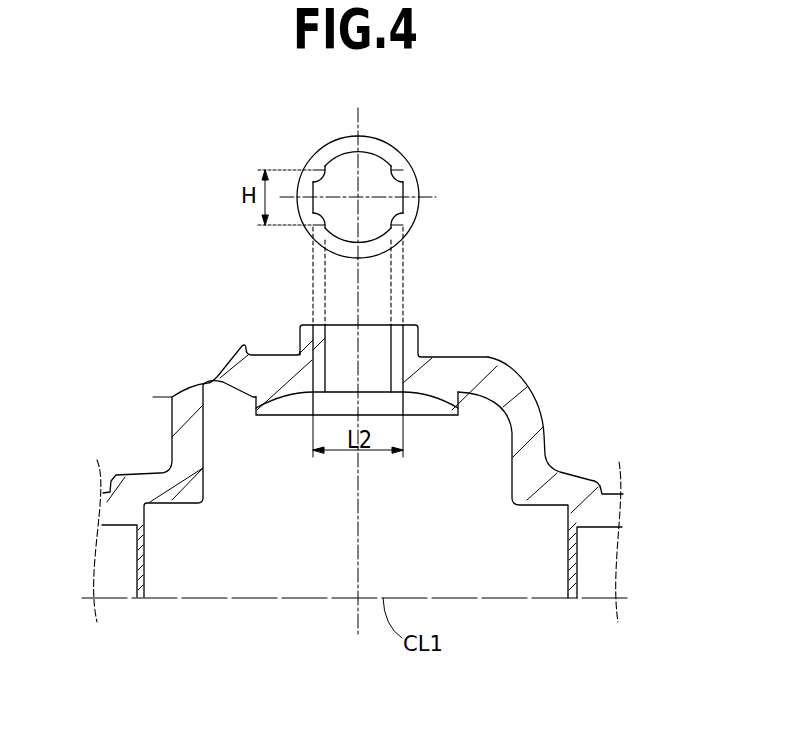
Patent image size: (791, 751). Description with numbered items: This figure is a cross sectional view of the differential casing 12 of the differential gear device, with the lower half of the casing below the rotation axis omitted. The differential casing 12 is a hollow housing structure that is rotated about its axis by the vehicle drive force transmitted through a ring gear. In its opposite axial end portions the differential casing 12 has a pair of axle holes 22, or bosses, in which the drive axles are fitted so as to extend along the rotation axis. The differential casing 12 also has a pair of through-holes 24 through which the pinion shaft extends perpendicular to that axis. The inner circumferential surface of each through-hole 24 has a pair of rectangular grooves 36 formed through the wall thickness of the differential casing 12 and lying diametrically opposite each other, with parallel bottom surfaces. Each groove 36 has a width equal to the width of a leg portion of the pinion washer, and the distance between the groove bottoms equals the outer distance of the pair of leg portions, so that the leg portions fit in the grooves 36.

The differential casing 12 is at (559, 442).
The axle hole 22 is at (118, 528).
The through-hole 24 is at (410, 213).
The groove 36 is at (336, 156).